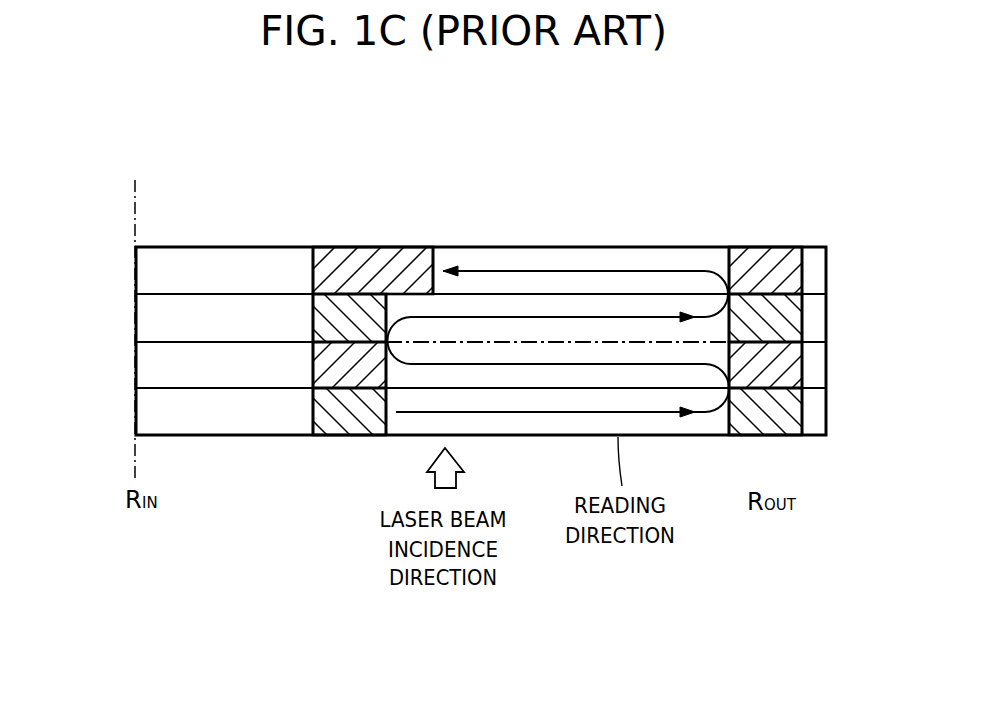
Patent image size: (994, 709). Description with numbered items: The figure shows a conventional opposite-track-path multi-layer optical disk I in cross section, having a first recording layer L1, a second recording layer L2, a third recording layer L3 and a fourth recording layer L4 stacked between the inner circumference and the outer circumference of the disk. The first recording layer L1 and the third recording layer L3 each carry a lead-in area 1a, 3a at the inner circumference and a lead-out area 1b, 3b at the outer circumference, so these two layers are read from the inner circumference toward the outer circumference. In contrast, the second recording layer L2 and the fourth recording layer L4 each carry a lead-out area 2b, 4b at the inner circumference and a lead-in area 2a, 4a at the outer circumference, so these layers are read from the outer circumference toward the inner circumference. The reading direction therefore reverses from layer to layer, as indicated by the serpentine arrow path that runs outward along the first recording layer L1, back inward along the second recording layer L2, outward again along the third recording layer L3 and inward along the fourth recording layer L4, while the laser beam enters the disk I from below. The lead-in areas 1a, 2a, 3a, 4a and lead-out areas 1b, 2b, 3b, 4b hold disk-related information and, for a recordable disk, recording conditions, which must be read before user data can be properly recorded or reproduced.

The lead-in area 1a is at (352, 422).
The lead-out area 1b is at (790, 412).
The lead-in area 2a is at (790, 368).
The lead-out area 2b is at (338, 365).
The lead-in area 3a is at (347, 310).
The lead-out area 3b is at (790, 320).
The lead-in area 4a is at (790, 271).
The lead-out area 4b is at (392, 249).
The information recording medium I is at (533, 435).
The first recording layer L1 is at (150, 414).
The second recording layer L2 is at (150, 367).
The third recording layer L3 is at (150, 320).
The fourth recording layer L4 is at (150, 273).